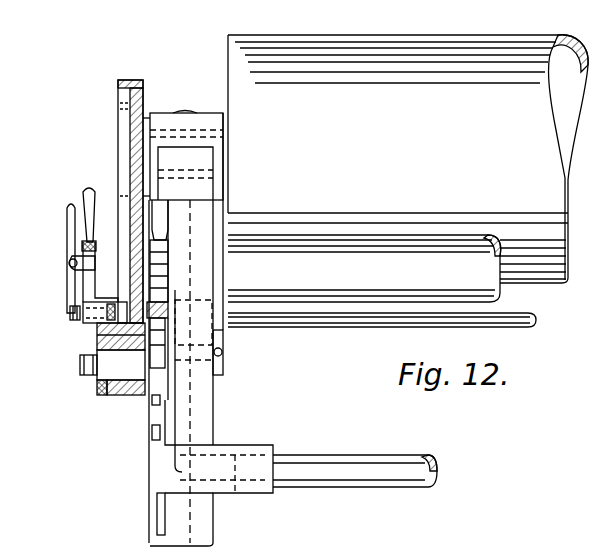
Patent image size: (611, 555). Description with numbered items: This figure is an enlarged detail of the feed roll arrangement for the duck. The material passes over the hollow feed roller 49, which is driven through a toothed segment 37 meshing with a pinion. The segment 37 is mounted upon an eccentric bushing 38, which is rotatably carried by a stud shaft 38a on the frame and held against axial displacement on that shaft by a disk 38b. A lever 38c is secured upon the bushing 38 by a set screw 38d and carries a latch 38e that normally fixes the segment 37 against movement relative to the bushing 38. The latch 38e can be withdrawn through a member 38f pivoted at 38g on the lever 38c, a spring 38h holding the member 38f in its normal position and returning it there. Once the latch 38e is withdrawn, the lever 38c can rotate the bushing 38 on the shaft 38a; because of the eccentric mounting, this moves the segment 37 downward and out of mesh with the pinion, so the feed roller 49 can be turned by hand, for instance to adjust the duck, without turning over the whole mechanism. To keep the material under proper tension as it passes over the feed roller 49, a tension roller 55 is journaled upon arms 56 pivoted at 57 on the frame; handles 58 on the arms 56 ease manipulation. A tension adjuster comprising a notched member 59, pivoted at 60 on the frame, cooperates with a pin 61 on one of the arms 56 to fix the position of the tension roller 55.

The toothed segment 37 is at (130, 119).
The eccentric bushing 38 is at (97, 342).
The stud shaft 38a is at (107, 362).
The disk 38b is at (97, 388).
The lever 38c is at (88, 190).
The set screw 38d is at (101, 394).
The latch 38e is at (72, 314).
The member 38f is at (67, 214).
The pivot 38g is at (68, 267).
The spring 38h is at (80, 247).
The hollow feed roller 49 is at (408, 159).
The tension roller 55 is at (357, 240).
The arms 56 is at (177, 408).
The pivot 57 is at (340, 463).
The handles 58 is at (160, 513).
The notched member 59 is at (165, 228).
The pivot 60 is at (370, 322).
The pin 61 is at (158, 310).